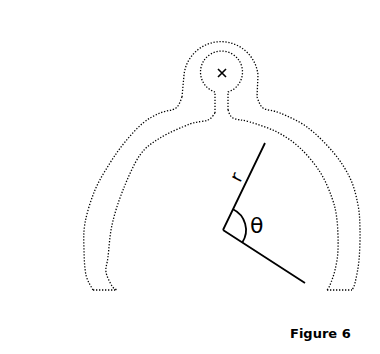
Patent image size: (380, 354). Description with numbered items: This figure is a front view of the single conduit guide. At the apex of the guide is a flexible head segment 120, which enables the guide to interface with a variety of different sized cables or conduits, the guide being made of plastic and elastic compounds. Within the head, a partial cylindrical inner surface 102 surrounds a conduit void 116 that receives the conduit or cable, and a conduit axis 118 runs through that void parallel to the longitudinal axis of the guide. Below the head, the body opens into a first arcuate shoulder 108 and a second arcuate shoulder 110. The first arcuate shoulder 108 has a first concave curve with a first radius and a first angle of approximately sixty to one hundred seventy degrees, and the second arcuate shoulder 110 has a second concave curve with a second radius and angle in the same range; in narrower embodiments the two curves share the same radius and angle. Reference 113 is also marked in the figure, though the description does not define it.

The partial cylindrical inner surface 102 is at (240, 68).
The first arcuate shoulder 108 is at (312, 140).
The second arcuate shoulder 110 is at (108, 172).
The outer surface of leg 113 is at (318, 193).
The conduit void 116 is at (222, 62).
The conduit axis 118 is at (220, 77).
The flexible head segment 120 is at (228, 36).